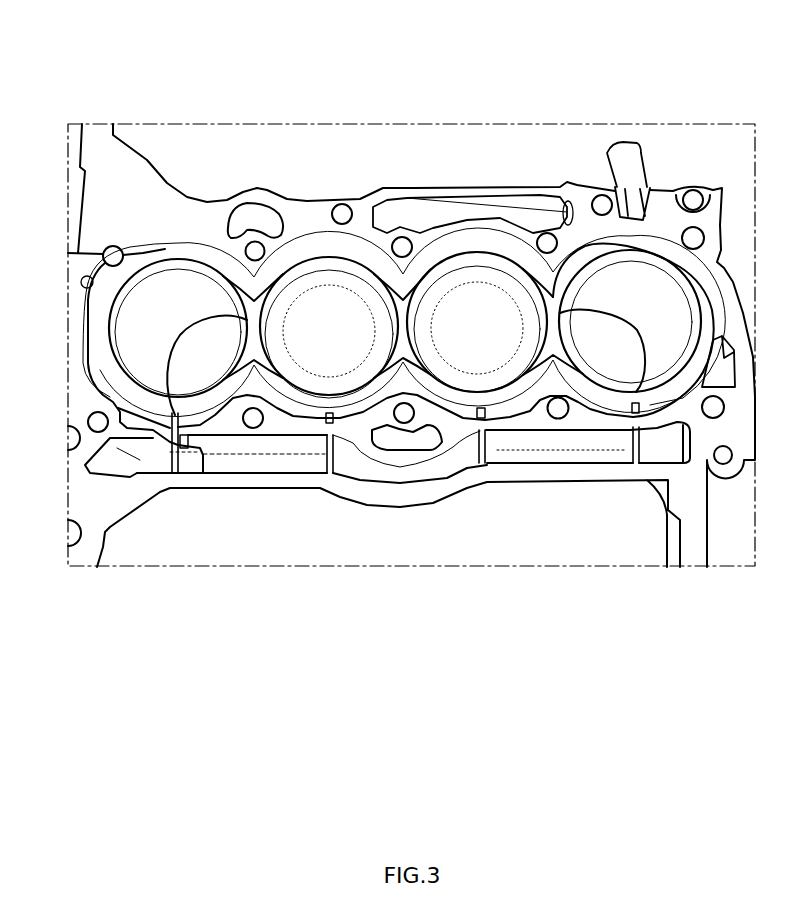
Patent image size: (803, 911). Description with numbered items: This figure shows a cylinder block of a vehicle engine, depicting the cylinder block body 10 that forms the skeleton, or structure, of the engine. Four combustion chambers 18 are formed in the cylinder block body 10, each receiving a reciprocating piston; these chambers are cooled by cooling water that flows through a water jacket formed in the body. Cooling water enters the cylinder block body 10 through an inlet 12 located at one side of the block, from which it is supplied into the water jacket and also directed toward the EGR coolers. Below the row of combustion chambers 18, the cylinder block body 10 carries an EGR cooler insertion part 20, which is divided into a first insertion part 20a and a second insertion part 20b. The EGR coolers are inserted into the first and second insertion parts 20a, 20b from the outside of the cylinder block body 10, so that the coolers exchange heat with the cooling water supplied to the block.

The cylinder block body 10 is at (152, 99).
The inlet 12 is at (138, 462).
The combustion chamber 18 is at (645, 310).
The EGR cooler insertion part 20 is at (515, 614).
The first insertion part 20a is at (273, 460).
The second insertion part 20b is at (507, 458).